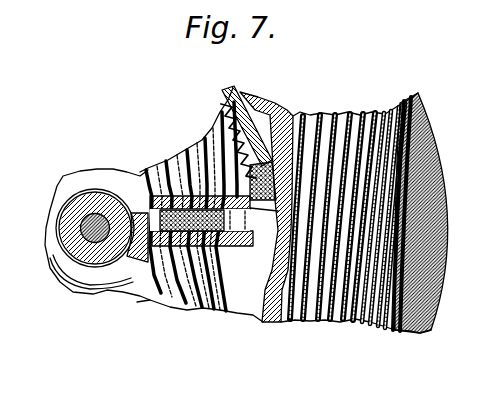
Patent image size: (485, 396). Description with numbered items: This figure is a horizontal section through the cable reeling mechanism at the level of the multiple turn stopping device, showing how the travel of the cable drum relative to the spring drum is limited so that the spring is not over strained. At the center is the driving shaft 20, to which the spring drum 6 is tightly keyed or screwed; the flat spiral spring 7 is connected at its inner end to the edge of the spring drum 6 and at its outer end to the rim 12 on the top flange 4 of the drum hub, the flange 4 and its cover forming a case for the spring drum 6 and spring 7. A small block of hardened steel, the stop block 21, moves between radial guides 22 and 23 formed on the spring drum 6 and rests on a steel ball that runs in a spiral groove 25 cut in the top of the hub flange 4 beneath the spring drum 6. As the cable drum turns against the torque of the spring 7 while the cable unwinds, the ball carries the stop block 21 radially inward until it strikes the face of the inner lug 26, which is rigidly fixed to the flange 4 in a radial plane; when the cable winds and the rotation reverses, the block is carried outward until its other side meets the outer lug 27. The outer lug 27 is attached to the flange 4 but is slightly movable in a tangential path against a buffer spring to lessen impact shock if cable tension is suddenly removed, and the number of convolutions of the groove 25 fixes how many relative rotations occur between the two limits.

The top flange 4 is at (194, 196).
The spring drum 6 is at (91, 206).
The spiral spring 7 is at (282, 324).
The rim 12 is at (424, 329).
The driving shaft 20 is at (108, 200).
The stop block 21 is at (238, 198).
The radial guide 22 is at (246, 248).
The radial guide 23 is at (214, 122).
The spiral groove 25 is at (216, 297).
The inner lug 26 is at (150, 172).
The outer lug 27 is at (276, 117).